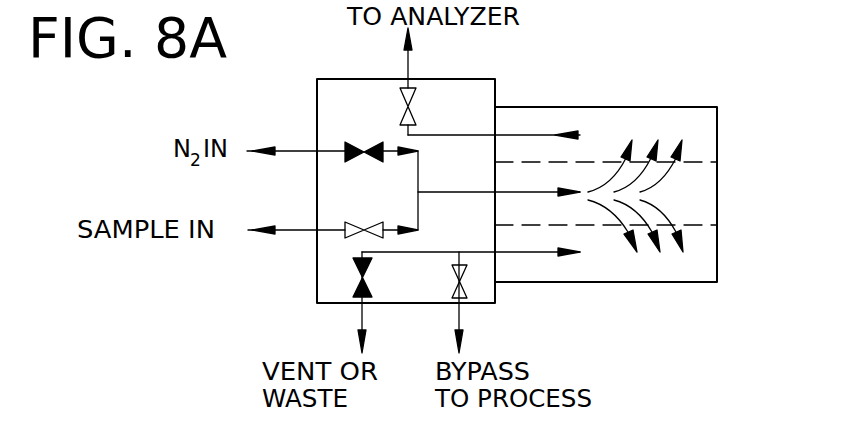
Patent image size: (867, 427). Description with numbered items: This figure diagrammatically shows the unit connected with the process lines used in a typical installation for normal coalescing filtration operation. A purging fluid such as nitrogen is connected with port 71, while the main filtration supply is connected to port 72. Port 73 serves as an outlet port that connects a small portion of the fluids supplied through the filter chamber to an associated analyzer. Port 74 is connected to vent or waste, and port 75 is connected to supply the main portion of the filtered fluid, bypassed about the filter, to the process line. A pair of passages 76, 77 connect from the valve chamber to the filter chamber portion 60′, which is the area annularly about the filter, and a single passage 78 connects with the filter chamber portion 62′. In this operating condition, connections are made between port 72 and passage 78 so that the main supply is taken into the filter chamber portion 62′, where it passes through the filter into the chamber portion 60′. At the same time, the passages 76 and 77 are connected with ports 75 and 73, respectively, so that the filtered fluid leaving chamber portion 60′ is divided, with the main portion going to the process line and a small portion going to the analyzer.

The port 71 is at (310, 145).
The port 72 is at (312, 237).
The port 73 is at (412, 72).
The port 74 is at (357, 303).
The port 75 is at (463, 307).
The passage 76 is at (495, 257).
The passage 77 is at (498, 130).
The passage 78 is at (500, 187).
The filter chamber portion 60′ is at (695, 257).
The filter chamber portion 62′ is at (688, 192).